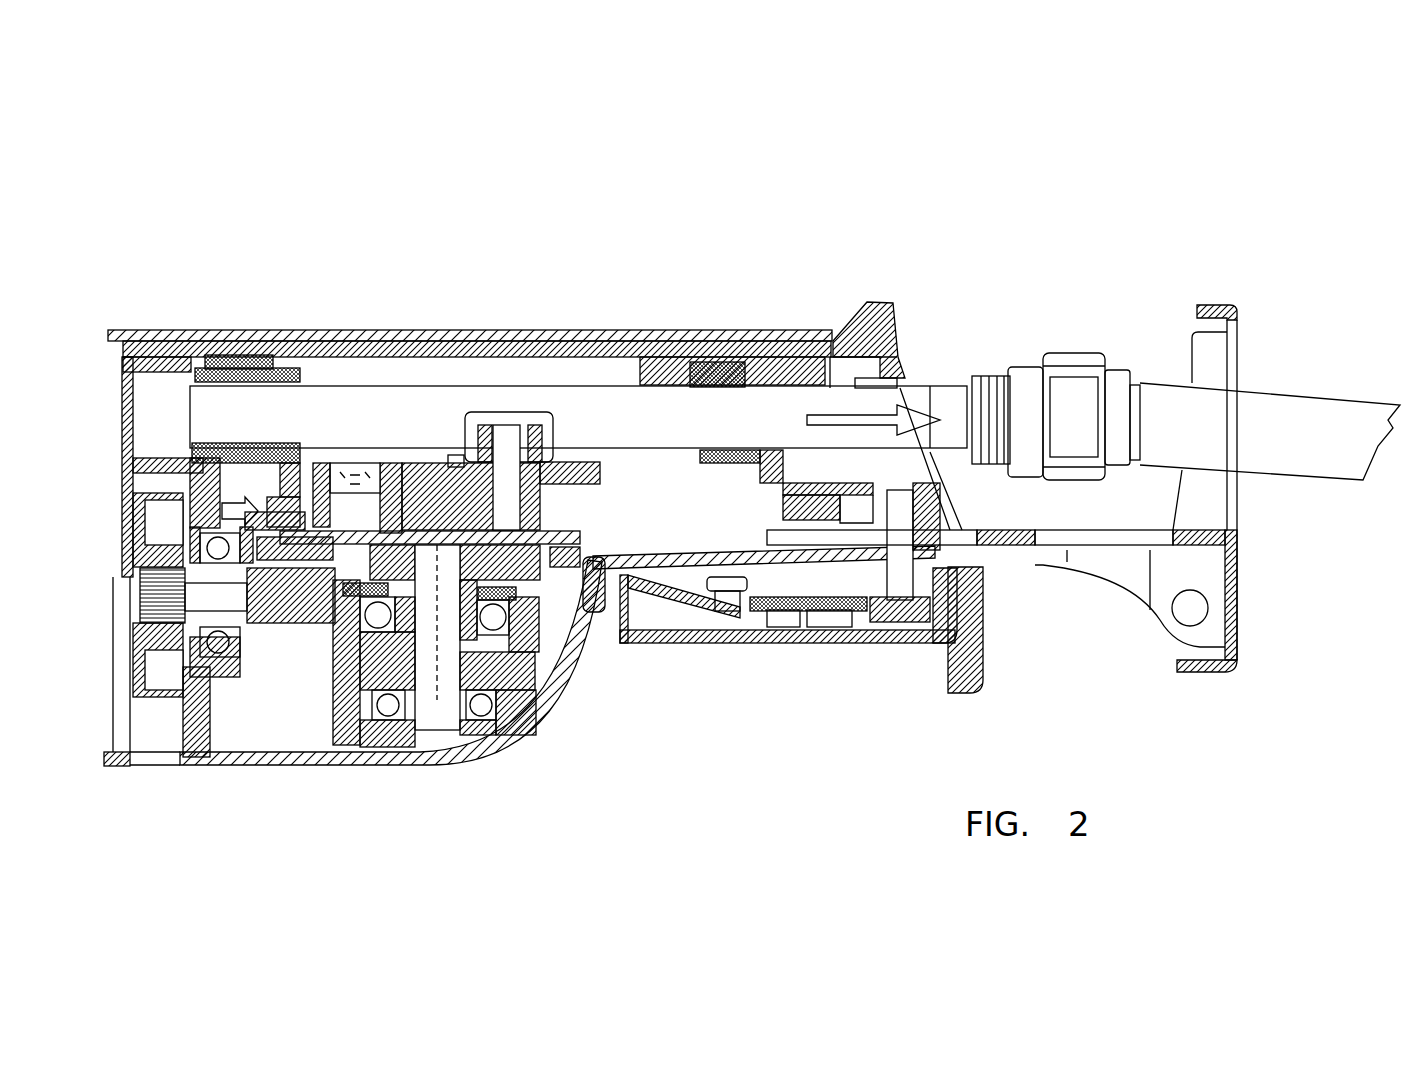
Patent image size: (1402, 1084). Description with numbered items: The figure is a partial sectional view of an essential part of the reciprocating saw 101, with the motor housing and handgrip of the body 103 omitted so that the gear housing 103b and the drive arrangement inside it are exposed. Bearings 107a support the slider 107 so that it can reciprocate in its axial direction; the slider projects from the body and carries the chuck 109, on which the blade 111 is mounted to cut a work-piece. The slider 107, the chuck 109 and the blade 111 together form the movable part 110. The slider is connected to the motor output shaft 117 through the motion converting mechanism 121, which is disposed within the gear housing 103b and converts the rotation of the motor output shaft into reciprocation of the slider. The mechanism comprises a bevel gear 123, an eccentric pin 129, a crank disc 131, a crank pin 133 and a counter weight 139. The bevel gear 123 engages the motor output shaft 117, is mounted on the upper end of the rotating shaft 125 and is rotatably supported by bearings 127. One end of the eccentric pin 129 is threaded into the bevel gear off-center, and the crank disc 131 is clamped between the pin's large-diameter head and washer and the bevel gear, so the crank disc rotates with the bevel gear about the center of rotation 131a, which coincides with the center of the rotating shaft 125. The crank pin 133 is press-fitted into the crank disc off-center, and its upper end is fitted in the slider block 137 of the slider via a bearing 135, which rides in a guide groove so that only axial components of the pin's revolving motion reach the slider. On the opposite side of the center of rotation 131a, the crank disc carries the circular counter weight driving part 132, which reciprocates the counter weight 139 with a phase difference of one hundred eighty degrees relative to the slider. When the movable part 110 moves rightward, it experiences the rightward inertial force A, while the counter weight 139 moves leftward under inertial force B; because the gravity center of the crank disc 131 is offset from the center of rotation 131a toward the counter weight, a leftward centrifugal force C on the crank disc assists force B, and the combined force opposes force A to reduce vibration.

The reciprocating saw 101 is at (938, 238).
The body 103 is at (823, 647).
The gear housing 103b is at (778, 340).
The slider 107 is at (950, 393).
The bearings 107a is at (227, 368).
The chuck 109 is at (1077, 352).
The movable part 110 is at (873, 386).
The blade 111 is at (1320, 397).
The motor output shaft 117 is at (242, 650).
The motion converting mechanism 121 is at (408, 730).
The bevel gear 123 is at (550, 583).
The rotating shaft 125 is at (457, 735).
The bearings 127 is at (497, 743).
The eccentric pin 129 is at (305, 625).
The crank disc 131 is at (413, 462).
The center of rotation 131a is at (455, 456).
The counter weight driving part 132 is at (395, 460).
The crank pin 133 is at (510, 435).
The bearing 135 is at (533, 450).
The slider block 137 is at (552, 438).
The counter weight 139 is at (241, 640).
The inertial force A is at (920, 417).
The inertial force B is at (228, 505).
The centrifugal force C is at (285, 505).